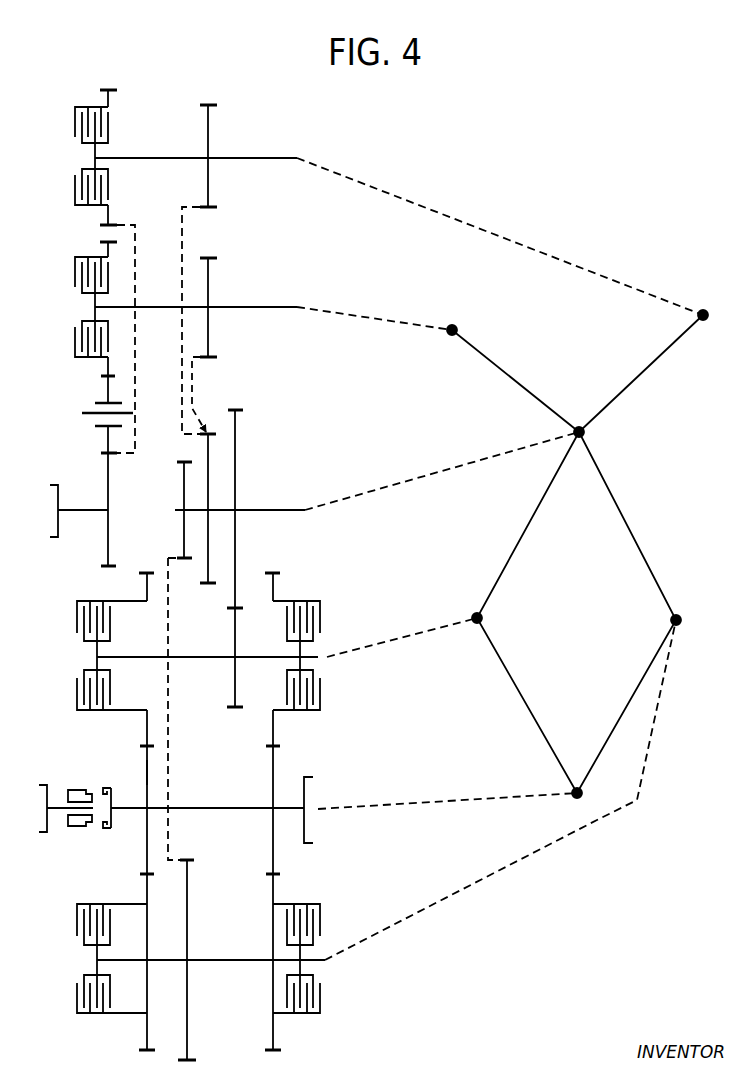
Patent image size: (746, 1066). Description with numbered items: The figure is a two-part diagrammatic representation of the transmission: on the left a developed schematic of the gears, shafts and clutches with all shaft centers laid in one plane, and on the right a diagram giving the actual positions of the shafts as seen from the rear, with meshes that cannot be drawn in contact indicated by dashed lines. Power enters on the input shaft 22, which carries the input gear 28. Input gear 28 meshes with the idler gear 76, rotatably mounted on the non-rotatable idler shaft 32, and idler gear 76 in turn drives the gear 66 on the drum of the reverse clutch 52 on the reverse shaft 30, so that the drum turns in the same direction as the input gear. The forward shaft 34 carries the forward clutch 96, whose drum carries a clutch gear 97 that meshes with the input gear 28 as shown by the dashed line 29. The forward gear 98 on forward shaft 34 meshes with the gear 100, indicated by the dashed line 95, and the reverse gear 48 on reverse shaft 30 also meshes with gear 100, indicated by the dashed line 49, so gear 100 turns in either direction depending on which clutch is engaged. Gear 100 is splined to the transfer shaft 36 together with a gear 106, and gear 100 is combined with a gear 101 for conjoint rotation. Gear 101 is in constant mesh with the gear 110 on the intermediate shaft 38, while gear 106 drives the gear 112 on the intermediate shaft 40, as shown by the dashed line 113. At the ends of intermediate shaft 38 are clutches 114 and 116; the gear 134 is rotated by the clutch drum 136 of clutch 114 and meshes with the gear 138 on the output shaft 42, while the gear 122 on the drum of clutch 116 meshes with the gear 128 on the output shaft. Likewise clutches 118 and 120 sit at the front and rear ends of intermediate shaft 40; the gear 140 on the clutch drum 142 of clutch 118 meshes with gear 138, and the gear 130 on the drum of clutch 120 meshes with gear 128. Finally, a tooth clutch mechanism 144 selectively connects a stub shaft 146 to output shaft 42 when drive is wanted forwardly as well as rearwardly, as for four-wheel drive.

The input shaft 22 is at (88, 512).
The input gear 28 is at (110, 482).
The dashed line 29 is at (137, 368).
The reverse shaft 30 is at (267, 307).
The idler shaft 32 is at (85, 413).
The forward shaft 34 is at (267, 158).
The transfer shaft 36 is at (273, 510).
The intermediate shaft 38 is at (205, 660).
The intermediate shaft 40 is at (230, 961).
The output shaft 42 is at (208, 808).
The reverse gear 48 is at (210, 275).
The dashed line 49 is at (195, 386).
The reverse clutch 52 is at (75, 258).
The gear 66 is at (108, 362).
The idler gear 76 is at (105, 438).
The dashed line 95 is at (182, 283).
The forward clutch 96 is at (80, 107).
The clutch gear 97 is at (110, 212).
The forward gear 98 is at (207, 127).
The gear 100 is at (208, 453).
The gear 101 is at (237, 471).
The gear 106 is at (184, 530).
The gear 110 is at (233, 633).
The gear 112 is at (192, 888).
The dashed line 113 is at (172, 732).
The clutch 114 is at (75, 600).
The clutch 116 is at (321, 599).
The clutch 118 is at (74, 1012).
The clutch 120 is at (321, 1014).
The gear 122 is at (278, 587).
The gear 128 is at (275, 768).
The gear 130 is at (280, 890).
The gear 134 is at (145, 728).
The clutch drum 136 is at (78, 712).
The gear 138 is at (147, 772).
The gear 140 is at (147, 880).
The clutch drum 142 is at (78, 905).
The tooth clutch mechanism 144 is at (97, 830).
The stub shaft 146 is at (52, 806).